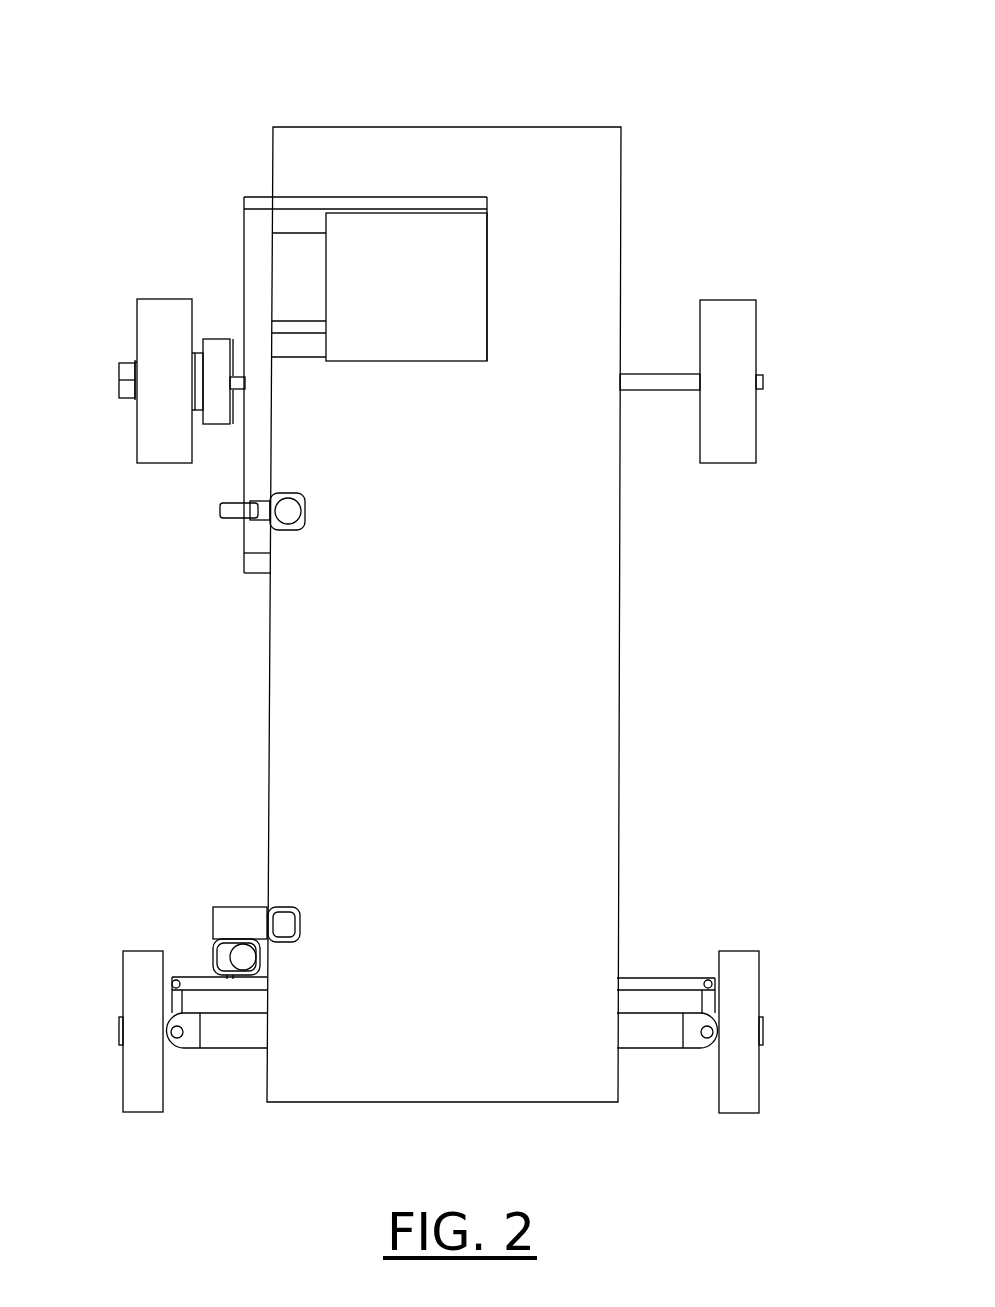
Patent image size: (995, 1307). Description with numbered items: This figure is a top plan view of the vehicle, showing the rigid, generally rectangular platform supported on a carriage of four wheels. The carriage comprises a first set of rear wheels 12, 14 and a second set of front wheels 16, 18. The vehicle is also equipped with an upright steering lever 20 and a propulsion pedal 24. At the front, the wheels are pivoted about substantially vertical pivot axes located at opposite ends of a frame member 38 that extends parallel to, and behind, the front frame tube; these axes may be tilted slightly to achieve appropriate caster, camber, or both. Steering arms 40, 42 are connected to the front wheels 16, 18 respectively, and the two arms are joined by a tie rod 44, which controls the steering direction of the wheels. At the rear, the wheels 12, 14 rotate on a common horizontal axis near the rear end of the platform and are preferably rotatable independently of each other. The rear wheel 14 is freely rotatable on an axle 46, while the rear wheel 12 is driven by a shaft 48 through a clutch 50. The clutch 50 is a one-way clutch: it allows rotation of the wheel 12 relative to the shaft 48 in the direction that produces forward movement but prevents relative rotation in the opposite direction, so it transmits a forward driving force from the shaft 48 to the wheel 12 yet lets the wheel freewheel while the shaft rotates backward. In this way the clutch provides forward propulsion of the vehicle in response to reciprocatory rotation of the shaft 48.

The rear wheel 12 is at (144, 439).
The rear wheel 14 is at (723, 332).
The front wheel 16 is at (125, 1077).
The front wheel 18 is at (737, 1087).
The upright steering lever 20 is at (212, 952).
The propulsion pedal 24 is at (420, 220).
The frame member 38 is at (238, 1033).
The steering arm 40 is at (172, 995).
The steering arm 42 is at (703, 1000).
The tie rod 44 is at (648, 983).
The axle 46 is at (648, 383).
The shaft 48 is at (196, 266).
The clutch 50 is at (218, 343).